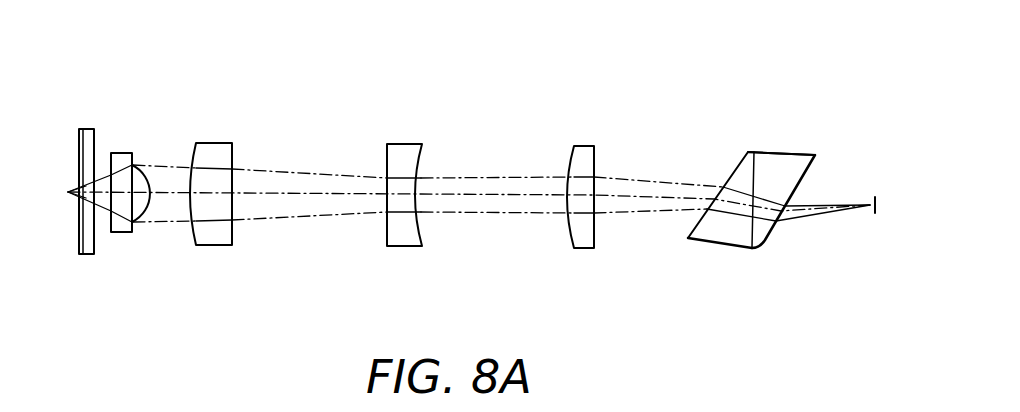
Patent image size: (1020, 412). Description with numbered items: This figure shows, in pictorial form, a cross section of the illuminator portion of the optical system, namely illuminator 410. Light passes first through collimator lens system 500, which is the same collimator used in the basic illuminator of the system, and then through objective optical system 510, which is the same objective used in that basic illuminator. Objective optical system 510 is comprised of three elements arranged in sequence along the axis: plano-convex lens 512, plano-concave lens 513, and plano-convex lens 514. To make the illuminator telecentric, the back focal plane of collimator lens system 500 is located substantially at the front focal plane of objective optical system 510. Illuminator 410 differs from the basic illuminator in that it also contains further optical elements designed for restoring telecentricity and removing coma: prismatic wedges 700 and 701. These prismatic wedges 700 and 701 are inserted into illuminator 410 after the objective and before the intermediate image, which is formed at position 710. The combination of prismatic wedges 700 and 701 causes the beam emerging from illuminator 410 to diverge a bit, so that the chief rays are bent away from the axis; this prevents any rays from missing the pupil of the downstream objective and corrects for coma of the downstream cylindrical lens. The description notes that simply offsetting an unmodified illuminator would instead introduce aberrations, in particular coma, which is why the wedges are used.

The illuminator 410 is at (471, 213).
The collimator lens system 500 is at (192, 257).
The objective optical system 510 is at (410, 184).
The plano-convex lens 512 is at (218, 246).
The plano-concave lens 513 is at (407, 246).
The plano-convex lens 514 is at (599, 214).
The prismatic wedge 700 is at (727, 246).
The prismatic wedge 701 is at (787, 153).
The position of intermediate image 710 is at (847, 223).